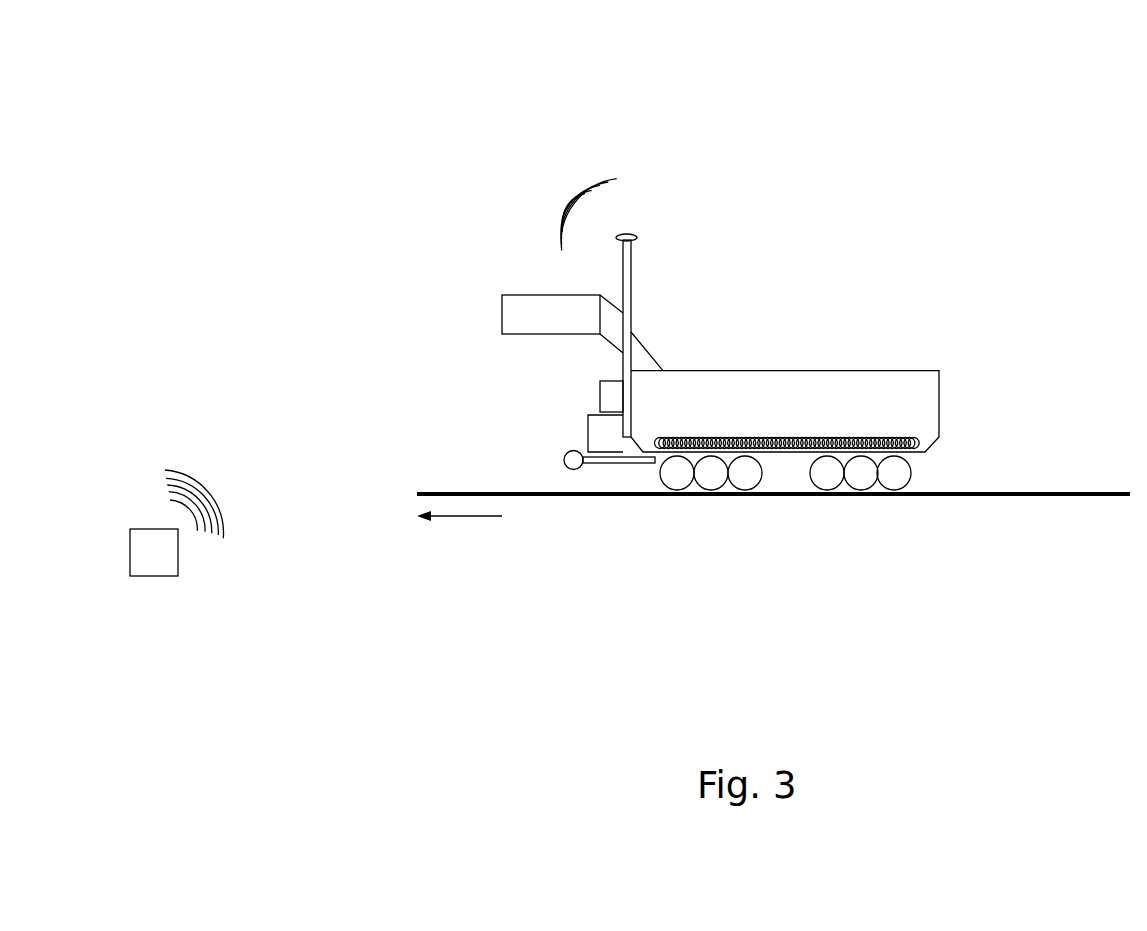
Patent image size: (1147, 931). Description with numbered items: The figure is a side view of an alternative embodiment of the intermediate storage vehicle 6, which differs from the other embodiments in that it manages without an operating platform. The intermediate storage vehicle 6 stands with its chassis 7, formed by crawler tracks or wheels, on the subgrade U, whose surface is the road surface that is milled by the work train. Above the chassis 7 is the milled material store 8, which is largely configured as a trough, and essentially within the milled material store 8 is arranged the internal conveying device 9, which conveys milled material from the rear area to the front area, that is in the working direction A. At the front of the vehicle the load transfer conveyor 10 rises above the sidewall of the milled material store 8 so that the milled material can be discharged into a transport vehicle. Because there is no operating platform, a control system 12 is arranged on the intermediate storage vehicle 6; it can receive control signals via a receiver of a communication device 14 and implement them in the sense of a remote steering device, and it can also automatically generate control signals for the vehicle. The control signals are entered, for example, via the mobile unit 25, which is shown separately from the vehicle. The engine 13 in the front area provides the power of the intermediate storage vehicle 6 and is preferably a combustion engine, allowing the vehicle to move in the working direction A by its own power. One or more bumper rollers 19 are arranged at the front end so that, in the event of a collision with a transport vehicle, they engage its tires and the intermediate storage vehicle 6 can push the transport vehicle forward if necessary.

The intermediate storage vehicle 6 is at (723, 388).
The chassis 7 is at (713, 473).
The milled material store 8 is at (923, 399).
The internal conveying device 9 is at (796, 437).
The load transfer conveyor 10 is at (528, 307).
The control system 12 is at (606, 398).
The engine 13 is at (607, 442).
The communication device 14 is at (625, 312).
The bumper roller 19 is at (570, 463).
The mobile unit 25 is at (153, 552).
The working direction A is at (470, 516).
The subgrade U is at (998, 494).